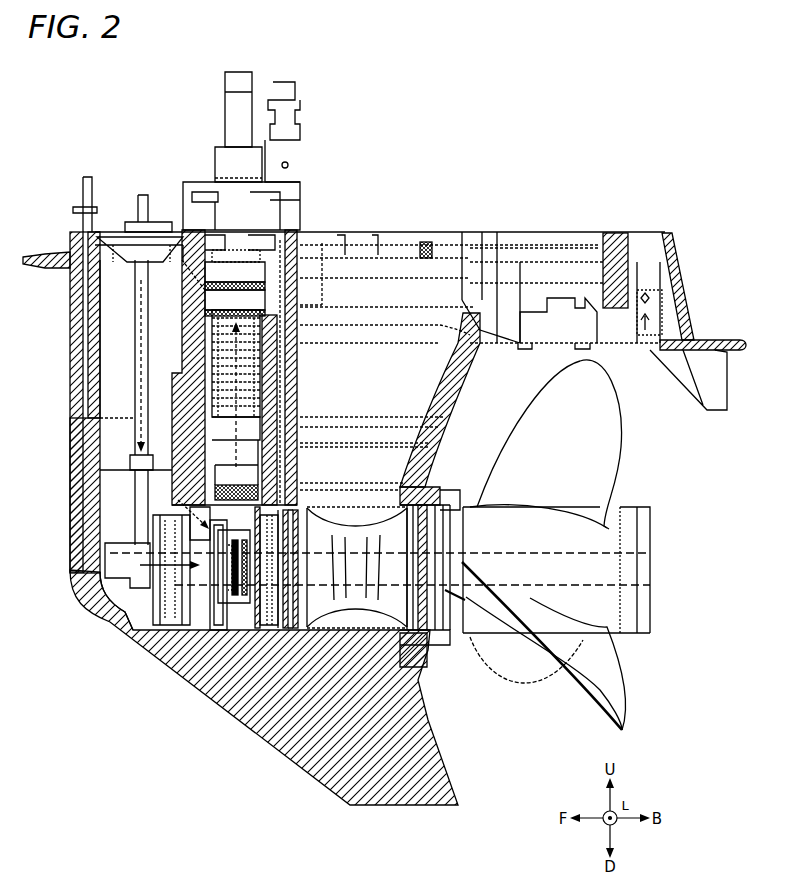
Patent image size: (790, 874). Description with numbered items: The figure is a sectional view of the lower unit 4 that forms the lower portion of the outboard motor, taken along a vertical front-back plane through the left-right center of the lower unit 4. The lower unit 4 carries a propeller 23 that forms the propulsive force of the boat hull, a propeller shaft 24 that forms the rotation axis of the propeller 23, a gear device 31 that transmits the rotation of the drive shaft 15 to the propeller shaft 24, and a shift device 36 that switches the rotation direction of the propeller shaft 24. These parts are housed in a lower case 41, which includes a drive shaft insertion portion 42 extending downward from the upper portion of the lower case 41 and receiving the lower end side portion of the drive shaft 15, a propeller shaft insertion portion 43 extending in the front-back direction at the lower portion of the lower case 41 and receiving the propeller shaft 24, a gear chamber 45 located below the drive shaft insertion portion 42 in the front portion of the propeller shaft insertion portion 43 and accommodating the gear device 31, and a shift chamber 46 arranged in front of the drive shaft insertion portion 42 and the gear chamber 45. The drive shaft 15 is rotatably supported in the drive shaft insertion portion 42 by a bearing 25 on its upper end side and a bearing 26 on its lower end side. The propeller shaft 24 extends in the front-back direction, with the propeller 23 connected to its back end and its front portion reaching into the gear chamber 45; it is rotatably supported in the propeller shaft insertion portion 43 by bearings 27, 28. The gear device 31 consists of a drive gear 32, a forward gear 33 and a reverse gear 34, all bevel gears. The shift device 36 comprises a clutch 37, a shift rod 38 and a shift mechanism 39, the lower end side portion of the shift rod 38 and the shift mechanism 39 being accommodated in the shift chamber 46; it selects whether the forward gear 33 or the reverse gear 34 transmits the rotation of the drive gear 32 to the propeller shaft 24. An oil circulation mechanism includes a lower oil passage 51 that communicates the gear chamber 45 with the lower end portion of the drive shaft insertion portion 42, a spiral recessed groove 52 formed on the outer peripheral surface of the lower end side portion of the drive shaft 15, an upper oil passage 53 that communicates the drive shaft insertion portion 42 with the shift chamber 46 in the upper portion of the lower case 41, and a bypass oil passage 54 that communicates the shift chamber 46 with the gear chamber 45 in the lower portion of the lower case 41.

The lower unit 4 is at (497, 127).
The drive shaft 15 is at (232, 113).
The propeller 23 is at (608, 460).
The propeller shaft 24 is at (600, 555).
The bearing 25 is at (275, 288).
The bearing 26 is at (432, 442).
The bearing 27 is at (170, 618).
The bearing 28 is at (292, 628).
The gear device 31 is at (182, 607).
The drive gear 32 is at (160, 520).
The forward gear 33 is at (203, 610).
The reverse gear 34 is at (262, 612).
The shift device 36 is at (93, 565).
The clutch 37 is at (223, 607).
The shift rod 38 is at (135, 300).
The shift mechanism 39 is at (137, 588).
The lower case 41 is at (70, 386).
The drive shaft insertion portion 42 is at (440, 415).
The propeller shaft insertion portion 43 is at (418, 673).
The gear chamber 45 is at (247, 610).
The shift chamber 46 is at (112, 443).
The lower oil passage 51 is at (430, 466).
The spiral recessed groove 52 is at (272, 363).
The upper oil passage 53 is at (173, 300).
The bypass oil passage 54 is at (215, 493).